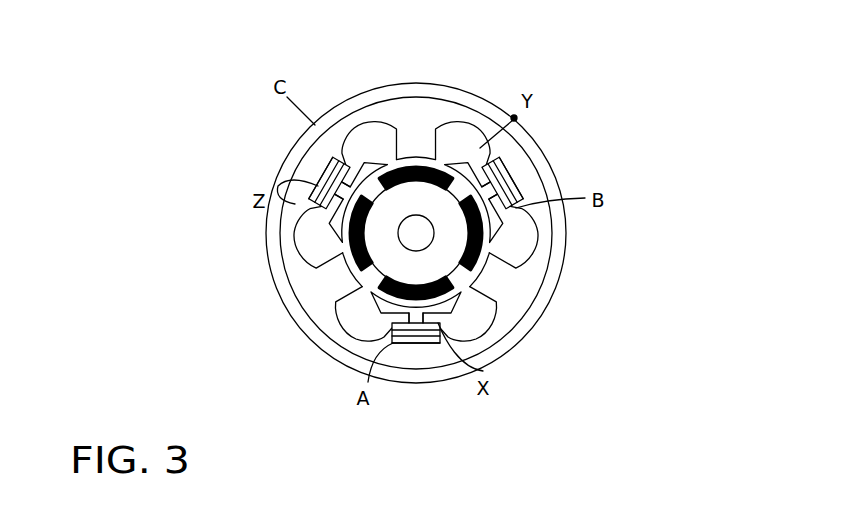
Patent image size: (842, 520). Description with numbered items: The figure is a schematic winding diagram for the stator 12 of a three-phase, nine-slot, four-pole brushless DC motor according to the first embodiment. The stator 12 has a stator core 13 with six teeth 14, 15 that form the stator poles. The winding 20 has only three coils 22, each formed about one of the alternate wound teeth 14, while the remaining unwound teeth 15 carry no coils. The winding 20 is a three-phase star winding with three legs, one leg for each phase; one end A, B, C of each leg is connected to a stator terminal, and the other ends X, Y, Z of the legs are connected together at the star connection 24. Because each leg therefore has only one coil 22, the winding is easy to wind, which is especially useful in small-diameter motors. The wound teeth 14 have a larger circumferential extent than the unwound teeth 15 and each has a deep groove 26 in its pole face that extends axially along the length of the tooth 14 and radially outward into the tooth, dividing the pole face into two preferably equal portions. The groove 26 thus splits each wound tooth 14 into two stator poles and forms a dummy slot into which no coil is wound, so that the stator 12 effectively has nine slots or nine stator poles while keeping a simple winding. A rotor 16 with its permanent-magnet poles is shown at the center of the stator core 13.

The stator 12 is at (318, 338).
The stator core 13 is at (483, 340).
The wound teeth 14 is at (513, 165).
The unwound teeth 15 is at (425, 135).
The rotor 16 is at (387, 258).
The winding 20 is at (380, 83).
The coils 22 is at (518, 182).
The star connection 24 is at (514, 116).
The groove 26 is at (495, 185).